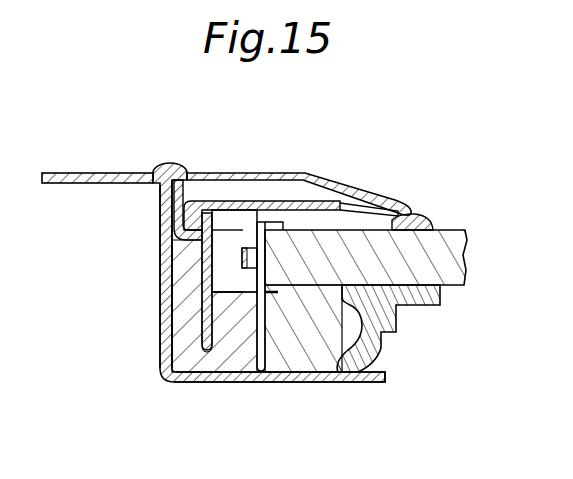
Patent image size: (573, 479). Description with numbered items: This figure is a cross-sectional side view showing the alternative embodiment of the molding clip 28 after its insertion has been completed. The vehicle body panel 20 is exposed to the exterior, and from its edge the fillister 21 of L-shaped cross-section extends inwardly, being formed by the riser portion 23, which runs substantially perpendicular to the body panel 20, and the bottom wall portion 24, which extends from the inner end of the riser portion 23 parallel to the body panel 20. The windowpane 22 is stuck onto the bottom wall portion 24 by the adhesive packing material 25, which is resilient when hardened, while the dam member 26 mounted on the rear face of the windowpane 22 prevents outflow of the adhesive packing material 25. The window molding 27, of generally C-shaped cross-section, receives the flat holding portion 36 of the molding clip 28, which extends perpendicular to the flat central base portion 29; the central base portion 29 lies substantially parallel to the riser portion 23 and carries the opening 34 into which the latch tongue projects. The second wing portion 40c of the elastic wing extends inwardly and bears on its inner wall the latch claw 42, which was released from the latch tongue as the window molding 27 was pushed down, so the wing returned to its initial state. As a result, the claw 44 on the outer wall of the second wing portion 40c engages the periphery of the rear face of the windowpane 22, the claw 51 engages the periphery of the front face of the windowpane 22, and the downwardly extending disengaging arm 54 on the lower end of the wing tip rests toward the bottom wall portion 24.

The body panel 20 is at (82, 172).
The fillister 21 is at (239, 313).
The windowpane 22 is at (460, 275).
The riser portion 23 is at (160, 286).
The bottom wall portion 24 is at (278, 383).
The adhesive packing material 25 is at (322, 355).
The dam member 26 is at (370, 345).
The window molding 27 is at (302, 173).
The molding clip 28 is at (241, 186).
The central base portion 29 is at (200, 318).
The opening 34 is at (204, 256).
The holding portion 36 is at (282, 201).
The second wing portion 40c is at (229, 243).
The latch claw 42 is at (247, 268).
The claw 44 is at (298, 383).
The claw 51 is at (356, 212).
The disengaging arm 54 is at (250, 352).